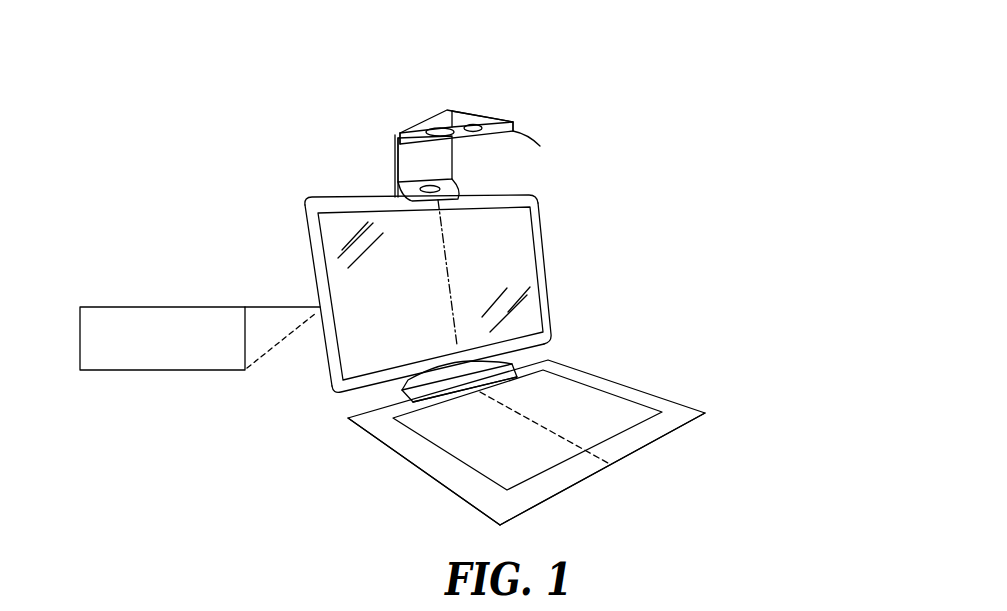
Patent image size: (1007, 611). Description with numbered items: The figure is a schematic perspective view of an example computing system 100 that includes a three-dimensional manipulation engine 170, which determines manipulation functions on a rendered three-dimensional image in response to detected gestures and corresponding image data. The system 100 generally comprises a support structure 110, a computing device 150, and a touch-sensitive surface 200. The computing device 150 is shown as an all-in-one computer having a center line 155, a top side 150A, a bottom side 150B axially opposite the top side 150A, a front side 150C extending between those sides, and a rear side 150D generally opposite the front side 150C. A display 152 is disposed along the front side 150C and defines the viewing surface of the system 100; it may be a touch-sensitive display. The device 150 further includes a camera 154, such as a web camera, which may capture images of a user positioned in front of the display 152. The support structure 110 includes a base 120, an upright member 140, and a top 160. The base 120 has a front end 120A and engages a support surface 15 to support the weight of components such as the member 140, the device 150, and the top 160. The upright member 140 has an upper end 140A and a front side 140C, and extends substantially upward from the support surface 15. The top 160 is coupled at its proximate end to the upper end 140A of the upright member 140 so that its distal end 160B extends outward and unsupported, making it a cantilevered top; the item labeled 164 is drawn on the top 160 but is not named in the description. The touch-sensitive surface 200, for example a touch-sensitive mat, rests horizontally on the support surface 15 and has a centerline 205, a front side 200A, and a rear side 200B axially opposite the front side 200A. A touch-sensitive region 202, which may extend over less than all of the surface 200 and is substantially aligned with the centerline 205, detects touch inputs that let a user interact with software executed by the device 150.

The computing system 100 is at (620, 157).
The support structure 110 is at (305, 177).
The base 120 is at (398, 392).
The front end of base 120A is at (451, 398).
The upright member 140 is at (392, 168).
The upper end of upright member 140A is at (398, 133).
The front side of upright member 140C is at (442, 153).
The computing device 150 is at (544, 251).
The top side of computing device 150A is at (512, 196).
The bottom side of computing device 150B is at (538, 347).
The front side of computing device 150C is at (529, 292).
The rear side of computing device 150D is at (308, 267).
The display 152 is at (373, 278).
The camera 154 is at (436, 204).
The center line of computing device 155 is at (447, 283).
The top 160 is at (458, 103).
The distal end of top 160B is at (513, 117).
The sensor 164 is at (523, 140).
The 3D manipulation engine 170 is at (168, 371).
The touch-sensitive surface 200 is at (668, 398).
The front side of touch-sensitive surface 200A is at (543, 504).
The rear side of touch-sensitive surface 200B is at (354, 413).
The touch-sensitive region 202 is at (610, 424).
The centerline of touch-sensitive surface 205 is at (527, 417).
The support surface 15 is at (403, 527).